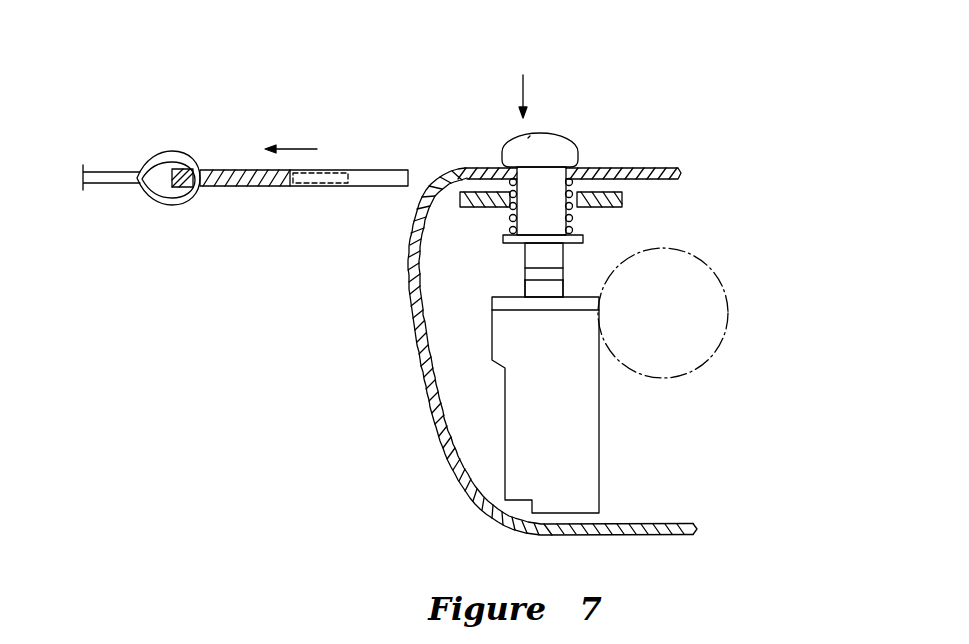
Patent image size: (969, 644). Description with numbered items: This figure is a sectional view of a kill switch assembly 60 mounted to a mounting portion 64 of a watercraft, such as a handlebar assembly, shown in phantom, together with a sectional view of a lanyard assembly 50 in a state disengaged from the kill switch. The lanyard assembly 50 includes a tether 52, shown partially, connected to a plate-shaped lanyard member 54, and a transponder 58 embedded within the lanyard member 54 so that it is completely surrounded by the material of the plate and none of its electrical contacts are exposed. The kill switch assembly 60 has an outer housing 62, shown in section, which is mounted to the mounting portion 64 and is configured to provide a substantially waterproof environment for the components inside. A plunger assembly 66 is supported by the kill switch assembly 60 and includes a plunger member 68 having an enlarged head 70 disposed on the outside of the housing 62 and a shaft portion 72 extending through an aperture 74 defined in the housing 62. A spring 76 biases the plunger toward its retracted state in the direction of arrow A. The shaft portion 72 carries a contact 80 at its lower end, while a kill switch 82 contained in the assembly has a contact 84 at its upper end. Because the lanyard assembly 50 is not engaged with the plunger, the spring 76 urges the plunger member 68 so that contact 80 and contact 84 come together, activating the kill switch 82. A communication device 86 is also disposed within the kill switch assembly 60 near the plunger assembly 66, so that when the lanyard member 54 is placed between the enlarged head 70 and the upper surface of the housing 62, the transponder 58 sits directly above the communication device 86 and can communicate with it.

The lanyard assembly 50 is at (135, 152).
The tether 52 is at (120, 182).
The lanyard member 54 is at (373, 186).
The transponder 58 is at (327, 170).
The kill switch assembly 60 is at (788, 150).
The outer housing 62 is at (648, 168).
The mounting portion 64 is at (723, 343).
The plunger assembly 66 is at (567, 125).
The plunger member 68 is at (552, 132).
The enlarged head 70 is at (528, 138).
The shaft portion 72 is at (532, 260).
The aperture 74 is at (573, 167).
The spring 76 is at (513, 218).
The contact 80 is at (552, 277).
The kill switch 82 is at (588, 467).
The contact 84 is at (537, 290).
The communication device 86 is at (622, 195).